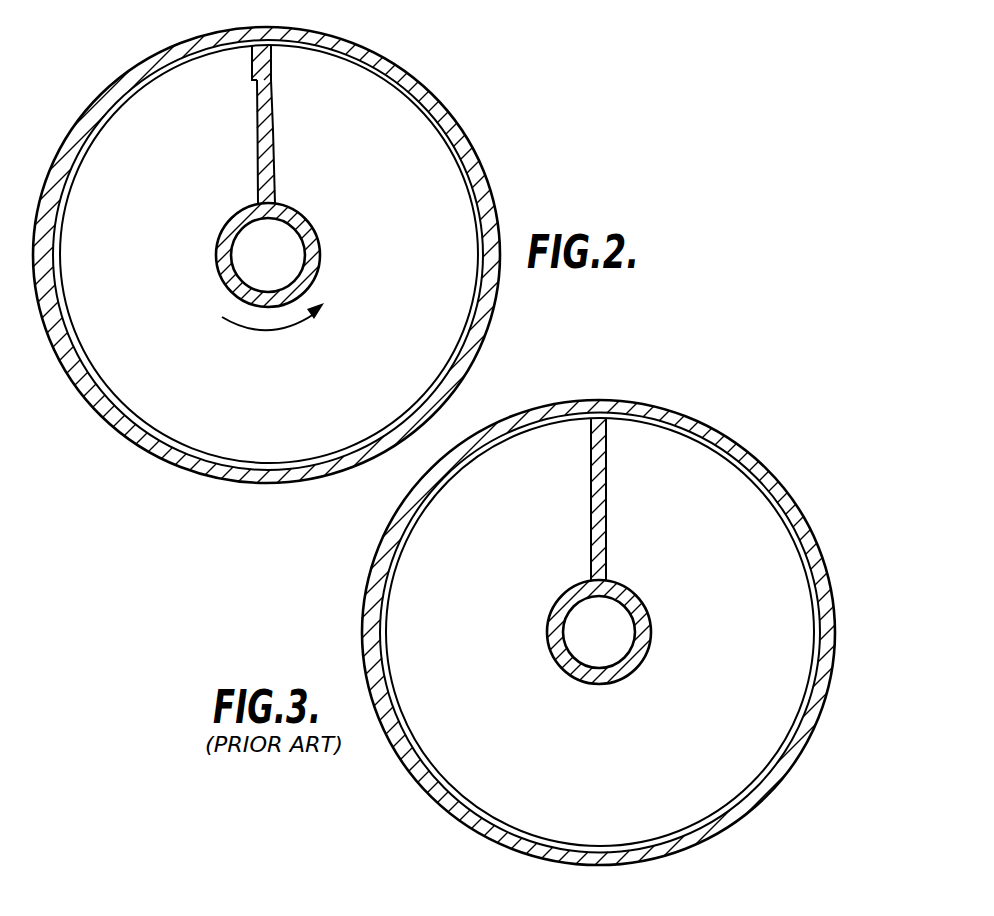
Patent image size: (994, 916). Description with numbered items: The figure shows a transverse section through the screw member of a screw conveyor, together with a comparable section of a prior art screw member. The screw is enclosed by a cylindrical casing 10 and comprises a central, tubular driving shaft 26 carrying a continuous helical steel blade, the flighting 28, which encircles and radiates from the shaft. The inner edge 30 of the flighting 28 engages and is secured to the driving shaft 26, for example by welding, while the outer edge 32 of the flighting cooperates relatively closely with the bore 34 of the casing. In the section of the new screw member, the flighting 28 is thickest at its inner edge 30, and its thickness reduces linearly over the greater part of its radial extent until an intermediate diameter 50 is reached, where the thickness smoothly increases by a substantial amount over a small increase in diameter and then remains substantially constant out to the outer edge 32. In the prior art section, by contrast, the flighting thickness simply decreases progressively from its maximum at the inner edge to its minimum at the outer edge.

The cylindrical casing 10 is at (467, 132).
The driving shaft 26 is at (321, 258).
The flighting 28 is at (388, 93).
The inner edge 30 is at (258, 190).
The outer edge 32 is at (270, 72).
The bore 34 is at (143, 72).
The intermediate diameter 50 is at (256, 82).